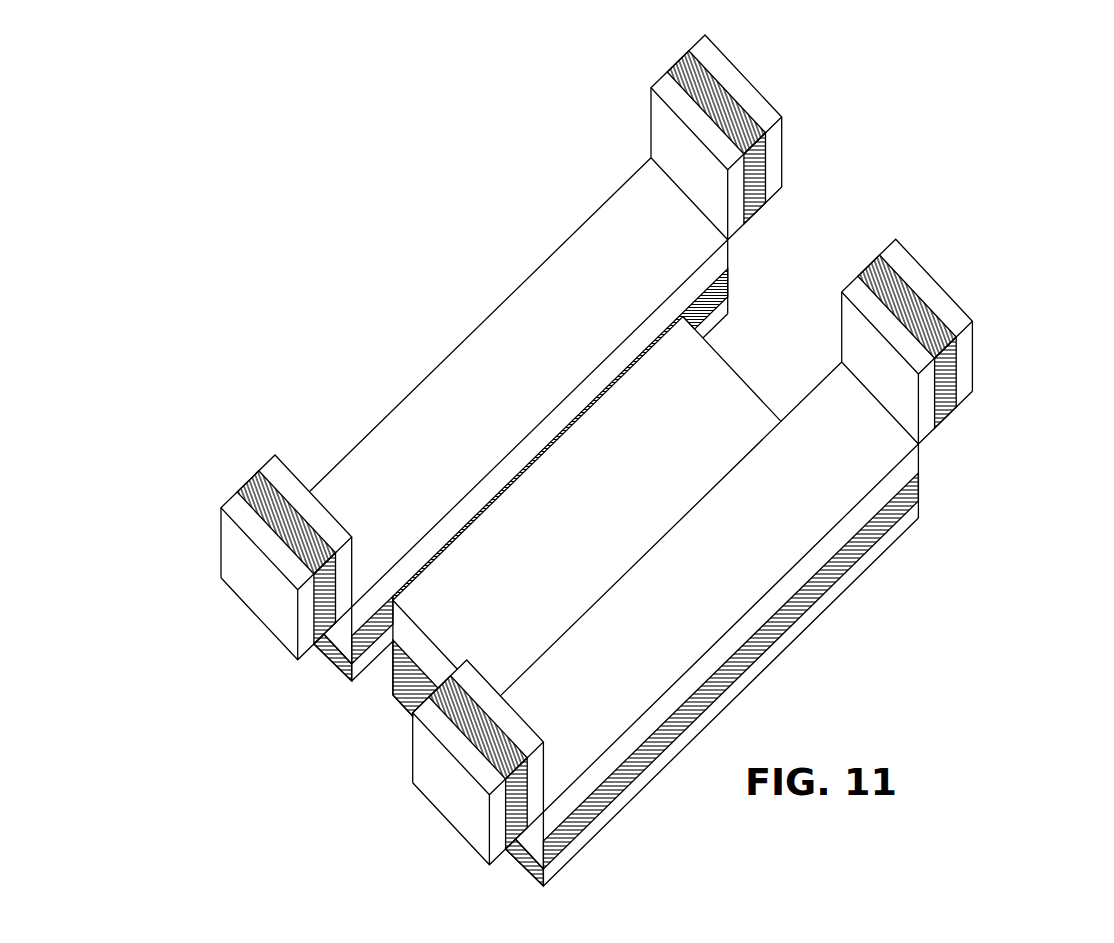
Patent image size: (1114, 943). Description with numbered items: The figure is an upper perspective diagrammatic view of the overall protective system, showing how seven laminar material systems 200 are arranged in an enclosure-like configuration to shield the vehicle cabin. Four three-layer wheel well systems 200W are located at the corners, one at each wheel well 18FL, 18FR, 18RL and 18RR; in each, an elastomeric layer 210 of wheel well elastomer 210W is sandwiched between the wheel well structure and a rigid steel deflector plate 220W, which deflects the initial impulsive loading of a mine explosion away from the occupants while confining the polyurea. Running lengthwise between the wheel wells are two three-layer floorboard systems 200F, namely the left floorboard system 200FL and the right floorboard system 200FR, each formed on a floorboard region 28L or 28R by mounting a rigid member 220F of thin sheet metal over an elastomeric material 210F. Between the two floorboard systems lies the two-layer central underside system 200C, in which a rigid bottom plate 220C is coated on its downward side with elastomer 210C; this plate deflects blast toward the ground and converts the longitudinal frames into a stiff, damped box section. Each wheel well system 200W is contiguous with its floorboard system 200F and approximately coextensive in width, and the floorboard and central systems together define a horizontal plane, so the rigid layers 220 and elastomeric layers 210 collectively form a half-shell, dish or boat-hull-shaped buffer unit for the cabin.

The laminar material system 200 is at (602, 456).
The three-layer wheel well system 200W is at (602, 456).
The three-layer floorboard system 200F is at (660, 522).
The right three-layer floorboard system 200FR is at (489, 326).
The left three-layer floorboard system 200FL is at (690, 540).
The two-layer central underside system 200C is at (525, 542).
The elastomeric layer 210 is at (663, 555).
The wheel well elastomeric material 210W is at (688, 60).
The floorboard elastomeric material 210F is at (724, 262).
The central elastomeric material 210C is at (392, 693).
The non-elastomeric rigid layer 220 is at (663, 584).
The wheel well rigid member 220W is at (562, 436).
The floorboard rigid member 220F is at (726, 312).
The bottom plate 220C is at (392, 655).
The rear right wheel well 18RR is at (686, 172).
The front right wheel well 18FR is at (292, 478).
The front left wheel well 18FL is at (528, 737).
The rear left wheel well 18RL is at (877, 373).
The right floorboard region 28R is at (738, 252).
The left floorboard region 28L is at (930, 452).